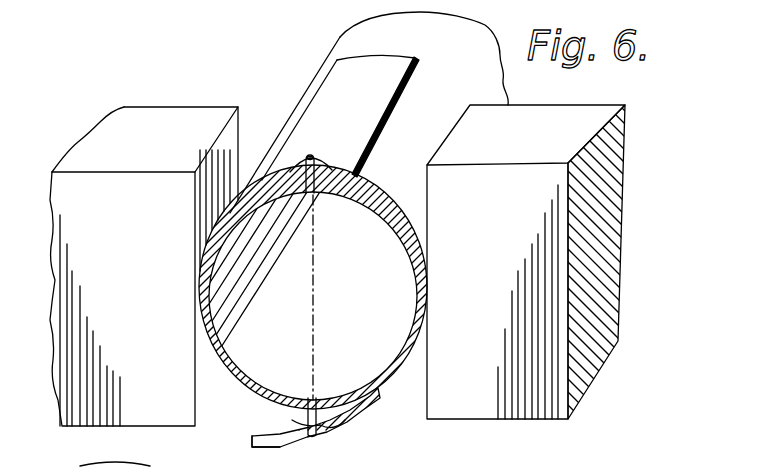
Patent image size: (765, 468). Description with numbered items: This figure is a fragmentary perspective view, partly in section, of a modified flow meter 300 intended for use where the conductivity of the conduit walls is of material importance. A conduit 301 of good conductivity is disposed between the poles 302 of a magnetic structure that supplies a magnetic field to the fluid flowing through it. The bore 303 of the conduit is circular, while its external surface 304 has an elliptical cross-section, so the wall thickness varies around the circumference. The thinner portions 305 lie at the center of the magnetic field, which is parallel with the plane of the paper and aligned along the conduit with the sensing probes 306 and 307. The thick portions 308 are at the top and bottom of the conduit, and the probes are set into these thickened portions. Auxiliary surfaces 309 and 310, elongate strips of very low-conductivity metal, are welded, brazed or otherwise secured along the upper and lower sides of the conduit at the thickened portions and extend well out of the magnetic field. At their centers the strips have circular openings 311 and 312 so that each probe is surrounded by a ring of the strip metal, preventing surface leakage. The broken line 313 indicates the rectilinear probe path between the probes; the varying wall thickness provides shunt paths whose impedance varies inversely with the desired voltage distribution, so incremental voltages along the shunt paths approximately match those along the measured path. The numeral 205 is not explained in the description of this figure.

The flow meter 300 is at (236, 64).
The conduit 301 is at (497, 55).
The poles 302 is at (197, 125).
The bore 303 is at (380, 377).
The external surface 304 is at (378, 400).
The thinner portions 305 is at (203, 292).
The sensing probe 306 is at (263, 180).
The sensing probe 307 is at (335, 428).
The thick portions 308 is at (320, 195).
The auxiliary surface 309 is at (316, 155).
The auxiliary surface 310 is at (252, 436).
The circular opening 311 is at (318, 157).
The circular opening 312 is at (300, 440).
The broken line 313 is at (313, 264).
The base 205 is at (209, 460).